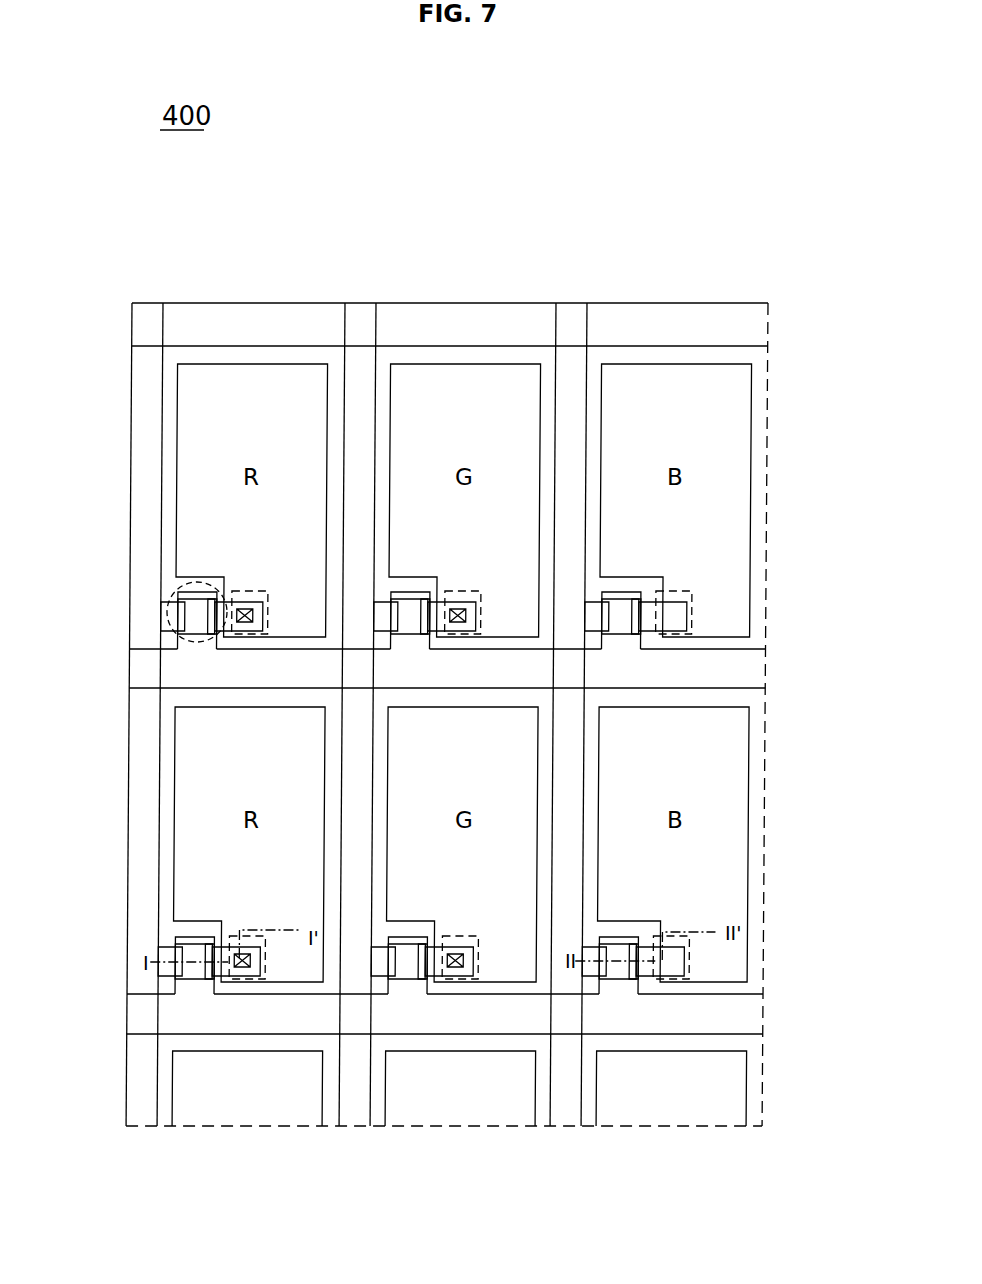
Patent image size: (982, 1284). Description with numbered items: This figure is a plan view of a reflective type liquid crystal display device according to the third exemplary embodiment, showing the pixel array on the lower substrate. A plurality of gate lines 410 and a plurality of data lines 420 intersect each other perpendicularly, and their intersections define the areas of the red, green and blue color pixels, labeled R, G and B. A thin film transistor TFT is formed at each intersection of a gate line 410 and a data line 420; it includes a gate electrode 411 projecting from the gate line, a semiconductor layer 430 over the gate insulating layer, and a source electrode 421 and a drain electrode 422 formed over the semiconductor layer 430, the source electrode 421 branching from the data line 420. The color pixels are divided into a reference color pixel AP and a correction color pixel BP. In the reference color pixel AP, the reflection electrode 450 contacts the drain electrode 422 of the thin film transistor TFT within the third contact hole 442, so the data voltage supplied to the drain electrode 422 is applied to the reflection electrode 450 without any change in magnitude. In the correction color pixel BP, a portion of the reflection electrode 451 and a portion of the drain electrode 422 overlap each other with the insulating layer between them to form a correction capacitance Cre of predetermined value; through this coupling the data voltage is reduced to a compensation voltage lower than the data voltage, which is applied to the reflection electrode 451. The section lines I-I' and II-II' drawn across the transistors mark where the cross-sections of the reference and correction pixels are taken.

The data line 420 is at (147, 311).
The gate line 410 is at (747, 672).
The gate electrode 411 is at (195, 643).
The source electrode 421 is at (173, 618).
The drain electrode 422 is at (207, 608).
The semiconductor layer 430 is at (190, 613).
The third contact hole 442 is at (233, 955).
The reflection electrode 450 is at (205, 435).
The reflection electrode 451 is at (713, 433).
The reference color pixel AP is at (248, 287).
The correction color pixel BP is at (672, 287).
The correction capacitance Cre is at (693, 612).
The thin film transistor TFT is at (205, 645).